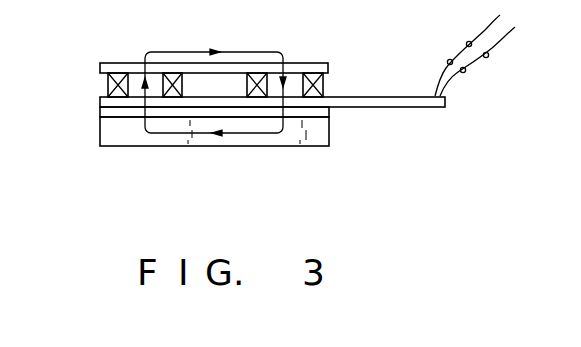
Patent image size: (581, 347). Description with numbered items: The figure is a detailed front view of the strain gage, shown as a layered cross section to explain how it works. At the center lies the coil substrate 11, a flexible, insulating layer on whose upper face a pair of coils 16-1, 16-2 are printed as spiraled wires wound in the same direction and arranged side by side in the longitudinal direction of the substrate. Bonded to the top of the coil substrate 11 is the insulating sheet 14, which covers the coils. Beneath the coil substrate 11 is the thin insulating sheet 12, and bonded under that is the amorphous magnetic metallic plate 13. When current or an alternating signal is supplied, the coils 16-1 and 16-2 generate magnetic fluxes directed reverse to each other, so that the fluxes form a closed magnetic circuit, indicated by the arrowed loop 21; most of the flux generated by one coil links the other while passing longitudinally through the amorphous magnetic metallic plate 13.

The coil substrate 11 is at (100, 102).
The thin insulating sheet 12 is at (100, 112).
The amorphous magnetic metallic plate 13 is at (100, 138).
The insulating sheet 14 is at (100, 68).
The first coil 16-1 is at (108, 88).
The second coil 16-2 is at (324, 80).
The magnetic flux path 21 is at (245, 52).